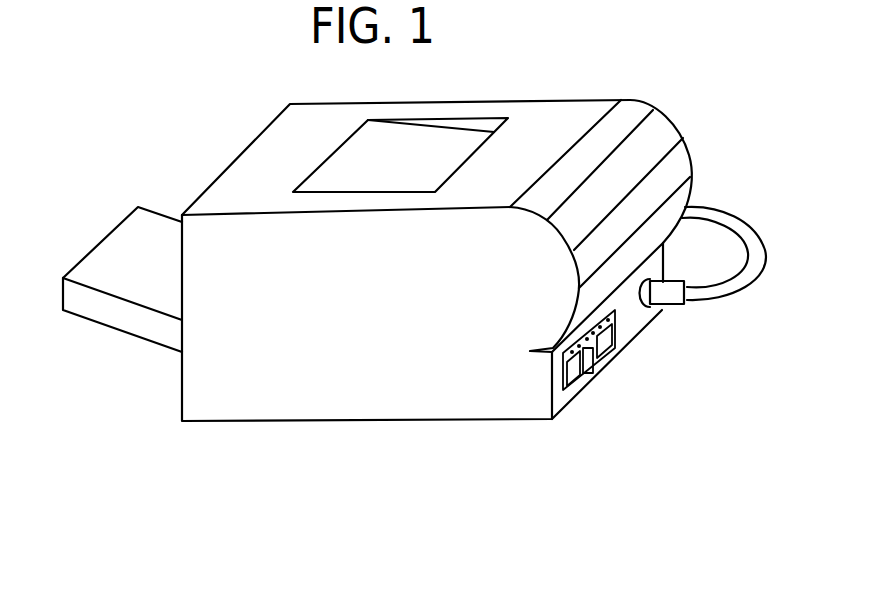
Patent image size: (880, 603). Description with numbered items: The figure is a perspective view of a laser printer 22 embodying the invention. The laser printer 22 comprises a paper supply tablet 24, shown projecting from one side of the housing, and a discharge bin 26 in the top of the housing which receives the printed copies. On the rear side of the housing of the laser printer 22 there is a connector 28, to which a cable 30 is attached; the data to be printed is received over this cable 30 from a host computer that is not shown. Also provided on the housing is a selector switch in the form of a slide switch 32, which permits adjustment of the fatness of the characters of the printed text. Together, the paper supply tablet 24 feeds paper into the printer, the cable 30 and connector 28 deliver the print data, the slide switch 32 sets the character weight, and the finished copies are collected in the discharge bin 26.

The laser printer 22 is at (622, 75).
The paper supply tablet 24 is at (120, 315).
The discharge bin 26 is at (474, 124).
The connector 28 is at (657, 308).
The cable 30 is at (748, 280).
The slide switch 32 is at (583, 360).